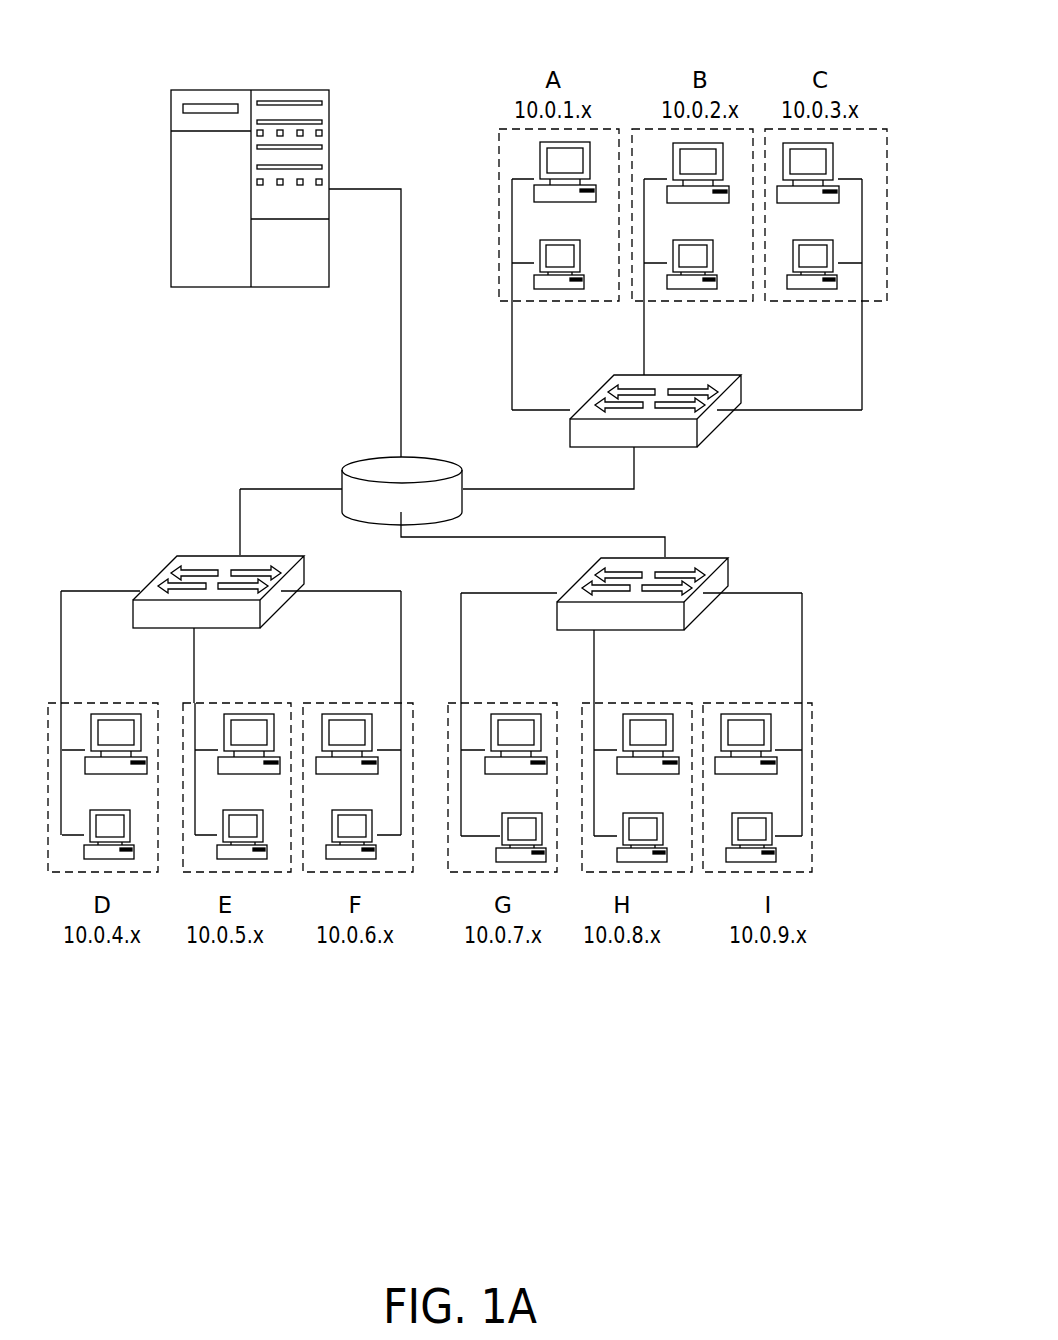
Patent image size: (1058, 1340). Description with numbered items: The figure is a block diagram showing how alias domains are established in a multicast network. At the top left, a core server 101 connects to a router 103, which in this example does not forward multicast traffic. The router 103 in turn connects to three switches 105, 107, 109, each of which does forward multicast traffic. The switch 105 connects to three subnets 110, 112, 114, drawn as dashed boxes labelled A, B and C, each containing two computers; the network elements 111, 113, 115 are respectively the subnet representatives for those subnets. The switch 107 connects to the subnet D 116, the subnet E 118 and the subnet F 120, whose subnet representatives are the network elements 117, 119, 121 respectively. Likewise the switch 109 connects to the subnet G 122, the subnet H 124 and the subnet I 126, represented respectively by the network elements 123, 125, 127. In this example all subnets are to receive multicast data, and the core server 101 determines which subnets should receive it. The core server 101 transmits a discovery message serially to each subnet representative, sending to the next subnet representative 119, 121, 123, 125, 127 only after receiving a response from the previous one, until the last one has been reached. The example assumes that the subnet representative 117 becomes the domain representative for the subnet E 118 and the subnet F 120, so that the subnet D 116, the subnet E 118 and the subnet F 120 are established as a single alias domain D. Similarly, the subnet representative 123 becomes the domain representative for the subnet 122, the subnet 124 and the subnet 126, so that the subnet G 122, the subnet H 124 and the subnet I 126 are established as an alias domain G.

The core server 101 is at (158, 188).
The router 103 is at (402, 491).
The switch 105 is at (730, 436).
The switch 107 is at (196, 543).
The switch 109 is at (740, 570).
The subnet 110 is at (526, 269).
The network element 111 is at (535, 152).
The subnet 112 is at (616, 196).
The network element 113 is at (652, 150).
The subnet 114 is at (804, 207).
The network element 115 is at (778, 140).
The subnet D 116 is at (115, 844).
The subnet representative 117 is at (134, 777).
The subnet E 118 is at (243, 826).
The subnet representative 119 is at (277, 787).
The subnet F 120 is at (381, 803).
The subnet representative 121 is at (376, 773).
The subnet G 122 is at (486, 732).
The subnet representative 123 is at (484, 731).
The subnet H 124 is at (654, 831).
The subnet representative 125 is at (664, 789).
The subnet I 126 is at (801, 732).
The subnet representative 127 is at (787, 740).